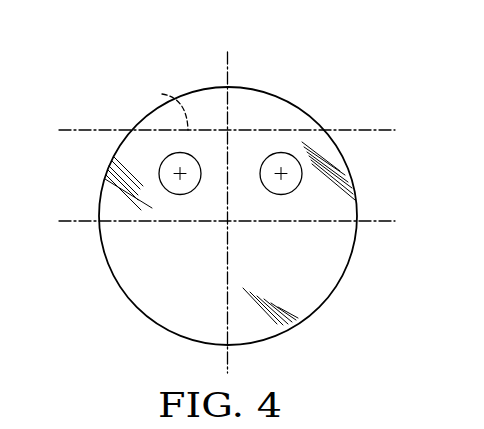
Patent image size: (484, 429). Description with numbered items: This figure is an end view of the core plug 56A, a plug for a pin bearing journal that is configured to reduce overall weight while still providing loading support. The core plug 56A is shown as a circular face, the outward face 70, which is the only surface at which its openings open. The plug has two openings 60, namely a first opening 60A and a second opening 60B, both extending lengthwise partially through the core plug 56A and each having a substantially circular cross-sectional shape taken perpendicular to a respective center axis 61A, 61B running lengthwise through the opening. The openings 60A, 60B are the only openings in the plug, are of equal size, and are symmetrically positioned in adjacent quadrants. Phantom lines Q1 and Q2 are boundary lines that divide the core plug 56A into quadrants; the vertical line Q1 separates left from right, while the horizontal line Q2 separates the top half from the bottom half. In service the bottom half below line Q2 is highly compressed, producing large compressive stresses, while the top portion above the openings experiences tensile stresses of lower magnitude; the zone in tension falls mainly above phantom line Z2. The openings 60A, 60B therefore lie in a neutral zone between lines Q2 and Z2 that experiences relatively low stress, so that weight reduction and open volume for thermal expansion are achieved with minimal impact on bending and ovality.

The phantom line Q1 is at (227, 68).
The phantom line Q2 is at (367, 221).
The phantom line Z2 is at (157, 95).
The core plug 56A is at (302, 123).
The opening 60 is at (232, 168).
The first opening 60A is at (163, 163).
The second opening 60B is at (293, 165).
The center axis 61A is at (178, 172).
The center axis 61B is at (280, 172).
The outward face 70 is at (178, 272).